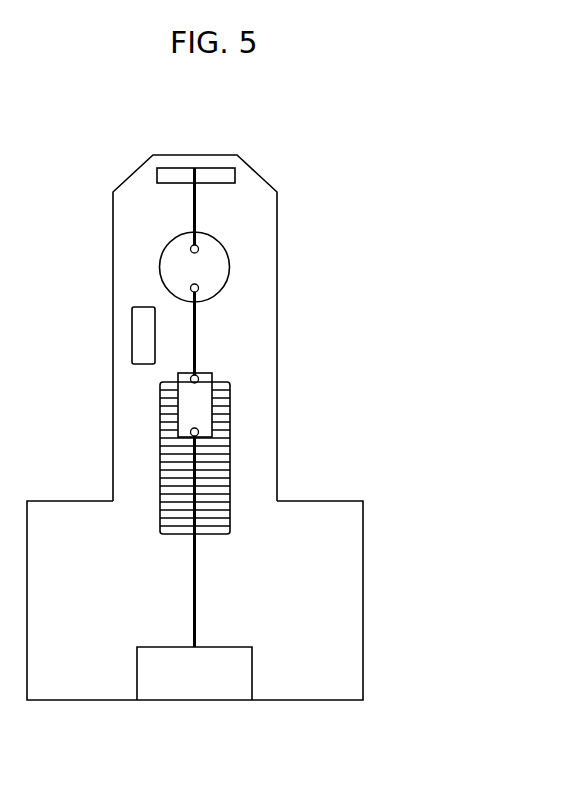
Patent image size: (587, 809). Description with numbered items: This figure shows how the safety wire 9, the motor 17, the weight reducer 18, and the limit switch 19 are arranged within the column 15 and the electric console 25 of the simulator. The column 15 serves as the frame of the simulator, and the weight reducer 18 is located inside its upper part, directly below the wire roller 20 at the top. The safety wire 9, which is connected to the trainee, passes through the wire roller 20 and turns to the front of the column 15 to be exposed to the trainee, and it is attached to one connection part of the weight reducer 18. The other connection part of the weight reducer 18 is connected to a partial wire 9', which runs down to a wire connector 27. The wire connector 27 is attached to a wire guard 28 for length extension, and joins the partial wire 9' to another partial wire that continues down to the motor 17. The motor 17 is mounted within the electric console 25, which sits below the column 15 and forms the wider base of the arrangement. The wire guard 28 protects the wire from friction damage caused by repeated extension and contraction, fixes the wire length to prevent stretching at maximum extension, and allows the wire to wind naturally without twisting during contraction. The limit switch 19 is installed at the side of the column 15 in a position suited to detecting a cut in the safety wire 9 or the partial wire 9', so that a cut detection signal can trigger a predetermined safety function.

The column 15 is at (277, 285).
The electric console 25 is at (363, 637).
The motor 17 is at (252, 678).
The wire roller 20 is at (236, 174).
The safety wire 9 is at (260, 206).
The weight reducer 18 is at (226, 251).
The limit switch 19 is at (132, 333).
The partial wire 9' is at (259, 333).
The wire connector 27 is at (213, 413).
The wire guard 28 is at (230, 462).